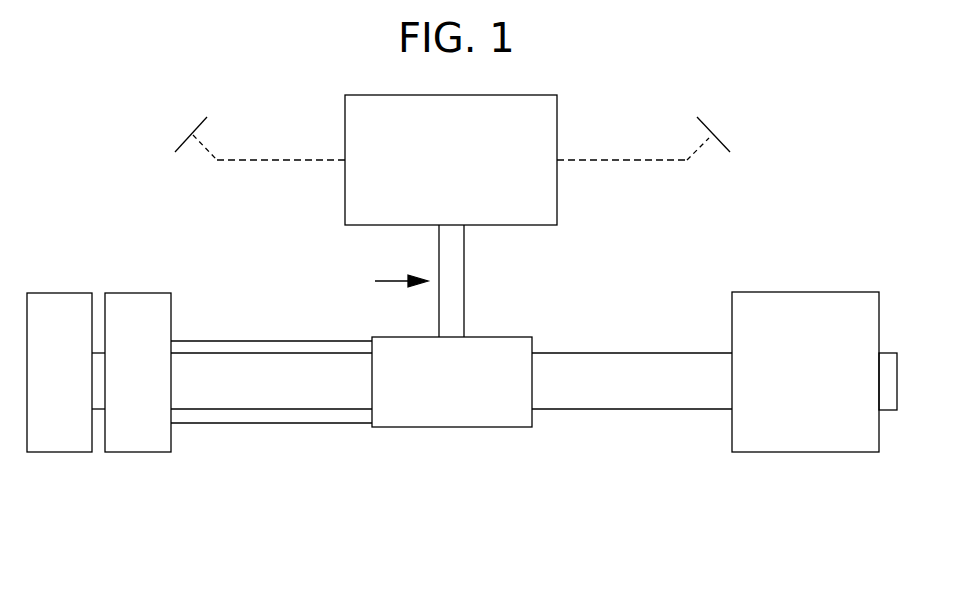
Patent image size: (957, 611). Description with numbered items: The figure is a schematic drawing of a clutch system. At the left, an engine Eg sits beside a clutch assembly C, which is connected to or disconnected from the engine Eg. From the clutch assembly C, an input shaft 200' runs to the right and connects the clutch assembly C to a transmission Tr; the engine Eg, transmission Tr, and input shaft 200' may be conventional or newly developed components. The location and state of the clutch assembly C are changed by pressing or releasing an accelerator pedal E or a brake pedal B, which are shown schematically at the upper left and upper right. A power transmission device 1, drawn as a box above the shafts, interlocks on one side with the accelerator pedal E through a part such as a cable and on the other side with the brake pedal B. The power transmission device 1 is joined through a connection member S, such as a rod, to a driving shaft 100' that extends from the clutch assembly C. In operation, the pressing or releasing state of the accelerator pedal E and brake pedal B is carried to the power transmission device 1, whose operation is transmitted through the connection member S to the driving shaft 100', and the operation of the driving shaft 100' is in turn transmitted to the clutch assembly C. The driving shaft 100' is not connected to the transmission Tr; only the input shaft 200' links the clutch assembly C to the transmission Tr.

The power transmission device 1 is at (467, 172).
The connection member S is at (439, 252).
The brake pedal B is at (256, 132).
The accelerator pedal E is at (644, 132).
The engine Eg is at (66, 372).
The clutch assembly C is at (138, 372).
The transmission Tr is at (814, 372).
The driving shaft 100' is at (271, 453).
The input shaft 200' is at (632, 418).